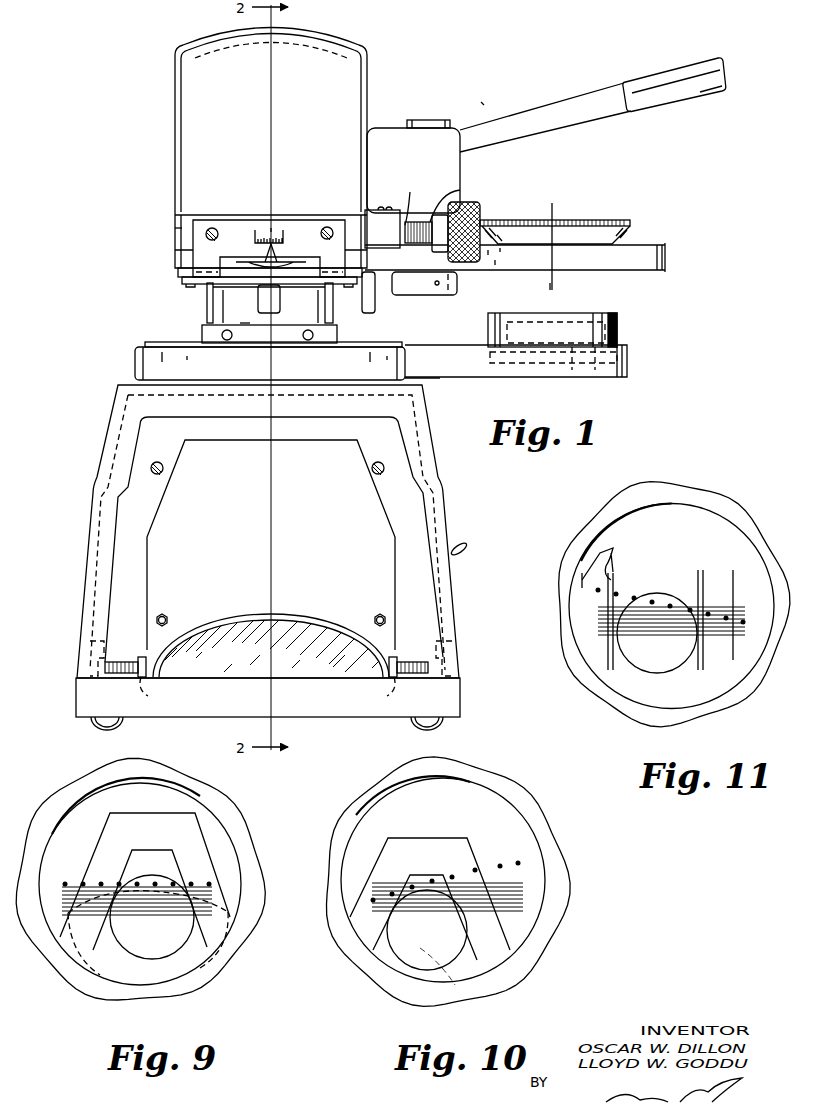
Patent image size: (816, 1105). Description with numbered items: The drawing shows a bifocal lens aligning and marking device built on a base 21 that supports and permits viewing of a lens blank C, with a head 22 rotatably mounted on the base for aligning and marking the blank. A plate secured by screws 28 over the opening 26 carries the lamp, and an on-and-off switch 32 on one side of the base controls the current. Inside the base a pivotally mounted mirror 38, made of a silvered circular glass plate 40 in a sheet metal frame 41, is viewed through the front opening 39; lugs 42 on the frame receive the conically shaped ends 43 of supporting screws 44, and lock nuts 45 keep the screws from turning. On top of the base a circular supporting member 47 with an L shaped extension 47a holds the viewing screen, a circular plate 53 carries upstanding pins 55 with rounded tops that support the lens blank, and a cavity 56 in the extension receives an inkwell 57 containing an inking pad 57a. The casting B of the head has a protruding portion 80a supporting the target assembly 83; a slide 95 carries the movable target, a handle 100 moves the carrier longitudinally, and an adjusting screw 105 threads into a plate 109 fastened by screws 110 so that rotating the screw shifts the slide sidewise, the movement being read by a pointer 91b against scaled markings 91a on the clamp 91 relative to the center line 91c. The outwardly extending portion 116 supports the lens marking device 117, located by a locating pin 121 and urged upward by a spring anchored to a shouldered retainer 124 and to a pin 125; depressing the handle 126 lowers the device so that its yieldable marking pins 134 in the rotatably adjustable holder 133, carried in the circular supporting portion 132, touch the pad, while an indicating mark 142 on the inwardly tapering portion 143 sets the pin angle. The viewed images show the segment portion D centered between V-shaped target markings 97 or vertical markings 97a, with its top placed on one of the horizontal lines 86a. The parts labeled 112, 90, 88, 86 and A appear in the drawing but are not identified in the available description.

In FIG. 1, the motor housing 112 is at (362, 62).
In FIG. 1, the head 22 is at (484, 102).
In FIG. 1, the outwardly extending portion 116 is at (398, 148).
In FIG. 1, the shouldered retainer 124 is at (425, 120).
In FIG. 1, the handle 126 is at (603, 110).
In FIG. 1, the plate 109 is at (410, 218).
In FIG. 1, the screws 110 is at (418, 205).
In FIG. 1, the adjusting screw 105 is at (418, 222).
In FIG. 1, the indicating mark 142 is at (552, 232).
In FIG. 1, the rotatably adjustable holder 133 is at (573, 218).
In FIG. 1, the inwardly tapering portion 143 is at (612, 232).
In FIG. 1, the lens marking device 117 is at (642, 240).
In FIG. 1, the circular supporting portion 132 is at (667, 258).
In FIG. 1, the yieldable marking pins 134 is at (550, 283).
In FIG. 1, the inking pad 57a is at (574, 313).
In FIG. 1, the inkwell 57 is at (622, 329).
In FIG. 1, the cavity 56 is at (630, 354).
In FIG. 1, the protruding portion 80a is at (381, 243).
In FIG. 1, the locating pin 121 is at (376, 300).
In FIG. 1, the pin 125 is at (436, 286).
In FIG. 1, the clamp 91 is at (312, 226).
In FIG. 1, the scaled markings 91a is at (257, 232).
In FIG. 1, the pointer 91b is at (279, 258).
In FIG. 1, the center line 91c is at (272, 230).
In FIG. 1, the slide 95 is at (175, 258).
In FIG. 1, the plate 90 is at (180, 271).
In FIG. 1, the target assembly 83 is at (182, 281).
In FIG. 1, the post 88 is at (222, 290).
In FIG. 1, the handle 100 is at (281, 305).
In FIG. 1, the upstanding pins 55 is at (222, 333).
In FIG. 1, the circular plate 53 is at (148, 343).
In FIG. 1, the circular supporting member 47 is at (135, 352).
In FIG. 1, the L shaped extension 47a is at (440, 378).
In FIG. 1, the base 21 is at (74, 503).
In FIG. 1, the screws 28 is at (159, 462).
In FIG. 1, the opening 39 is at (400, 527).
In FIG. 1, the on-and-off switch 32 is at (461, 554).
In FIG. 1, the opening 26 is at (168, 567).
In FIG. 1, the frame 41 is at (226, 630).
In FIG. 1, the mirror 38 is at (291, 636).
In FIG. 1, the circular glass plate 40 is at (326, 640).
In FIG. 1, the supporting screws 44 is at (110, 662).
In FIG. 1, the lock nuts 45 is at (88, 648).
In FIG. 1, the lugs 42 is at (140, 657).
In FIG. 1, the conically shaped ends 43 is at (148, 696).
In FIG. 1, the spindle axis A is at (247, 321).
In FIG. 1, the casting B is at (172, 231).
In FIG. 11, the lens blank C is at (698, 532).
In FIG. 9, the lens blank C is at (117, 963).
In FIG. 10, the lens blank C is at (491, 835).
In FIG. 11, the segment portion D is at (644, 649).
In FIG. 9, the segment portion D is at (173, 931).
In FIG. 10, the segment portion D is at (412, 952).
In FIG. 9, the V-shaped target markings 97 is at (200, 842).
In FIG. 10, the V-shaped target markings 97 is at (380, 868).
In FIG. 11, the vertical markings 97a is at (613, 555).
In FIG. 11, the grid lines 86 is at (742, 607).
In FIG. 9, the grid lines 86 is at (198, 921).
In FIG. 10, the grid lines 86 is at (518, 893).
In FIG. 9, the lines 86a is at (214, 896).